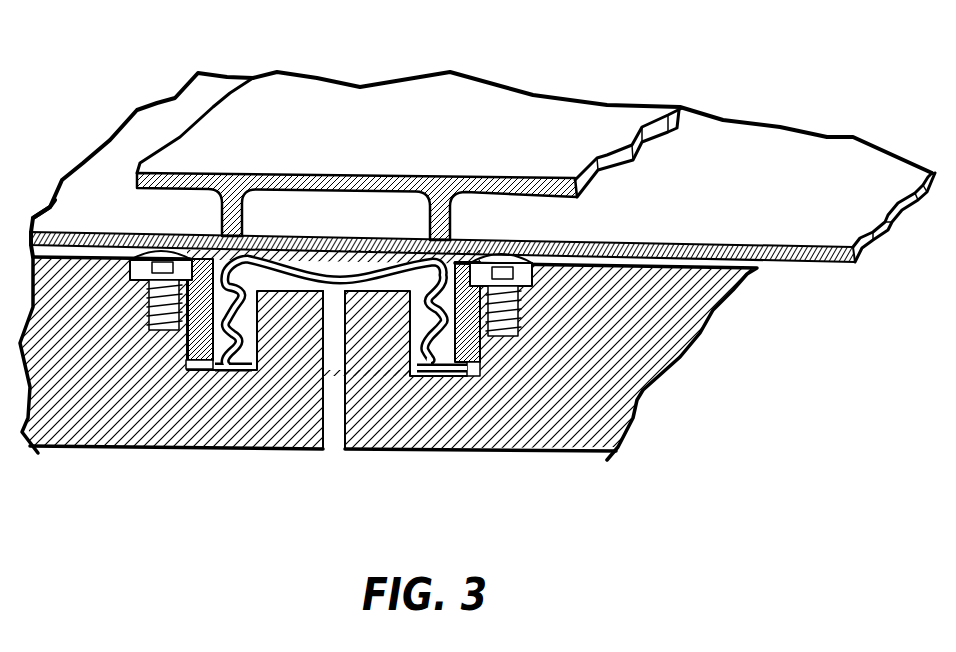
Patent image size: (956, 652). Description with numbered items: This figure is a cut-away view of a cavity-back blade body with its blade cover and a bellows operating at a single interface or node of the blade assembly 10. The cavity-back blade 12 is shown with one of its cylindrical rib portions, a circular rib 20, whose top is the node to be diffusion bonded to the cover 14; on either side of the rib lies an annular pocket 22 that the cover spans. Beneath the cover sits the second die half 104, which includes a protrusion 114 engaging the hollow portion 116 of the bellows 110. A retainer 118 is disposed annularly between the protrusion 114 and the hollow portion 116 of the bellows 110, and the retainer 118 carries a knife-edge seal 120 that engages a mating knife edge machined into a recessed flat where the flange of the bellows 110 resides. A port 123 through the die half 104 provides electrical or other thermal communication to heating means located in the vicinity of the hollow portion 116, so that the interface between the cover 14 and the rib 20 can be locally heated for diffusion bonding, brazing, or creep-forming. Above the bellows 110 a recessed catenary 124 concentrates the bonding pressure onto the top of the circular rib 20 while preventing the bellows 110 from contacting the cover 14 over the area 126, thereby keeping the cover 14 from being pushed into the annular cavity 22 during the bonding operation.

The blade assembly 10 is at (482, 169).
The cavity-back blade 12 is at (615, 103).
The cover 14 is at (813, 220).
The circular rib 20 is at (442, 228).
The annular pocket 22 is at (336, 227).
The second die half 104 is at (680, 365).
The bellows 110 is at (505, 364).
The protrusion 114 is at (398, 374).
The hollow portion 116 is at (427, 285).
The retainer 118 is at (205, 342).
The knife-edge seal 120 is at (203, 278).
The port 123 is at (335, 458).
The recessed catenary 124 is at (373, 267).
The area 126 is at (325, 258).